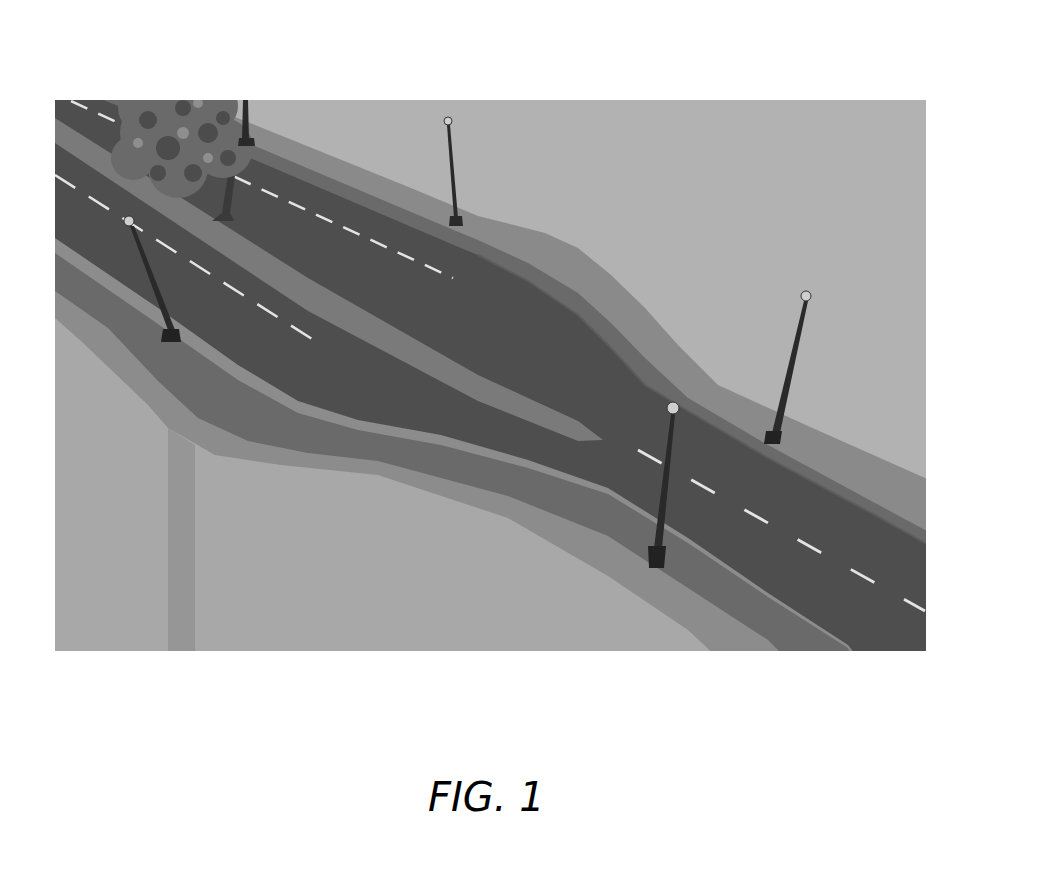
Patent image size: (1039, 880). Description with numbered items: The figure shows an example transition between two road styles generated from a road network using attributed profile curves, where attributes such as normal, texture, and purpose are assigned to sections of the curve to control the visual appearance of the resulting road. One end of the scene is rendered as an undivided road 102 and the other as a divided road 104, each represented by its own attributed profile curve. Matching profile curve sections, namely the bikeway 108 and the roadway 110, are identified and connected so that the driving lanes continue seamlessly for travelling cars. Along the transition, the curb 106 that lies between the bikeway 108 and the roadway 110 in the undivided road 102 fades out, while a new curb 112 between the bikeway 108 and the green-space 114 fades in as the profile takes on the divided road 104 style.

The undivided road 102 is at (915, 458).
The divided road 104 is at (498, 163).
The curb 106 is at (868, 513).
The bikeway 108 is at (533, 272).
The roadway 110 is at (850, 597).
The new curb 112 is at (500, 247).
The green-space 114 is at (473, 227).